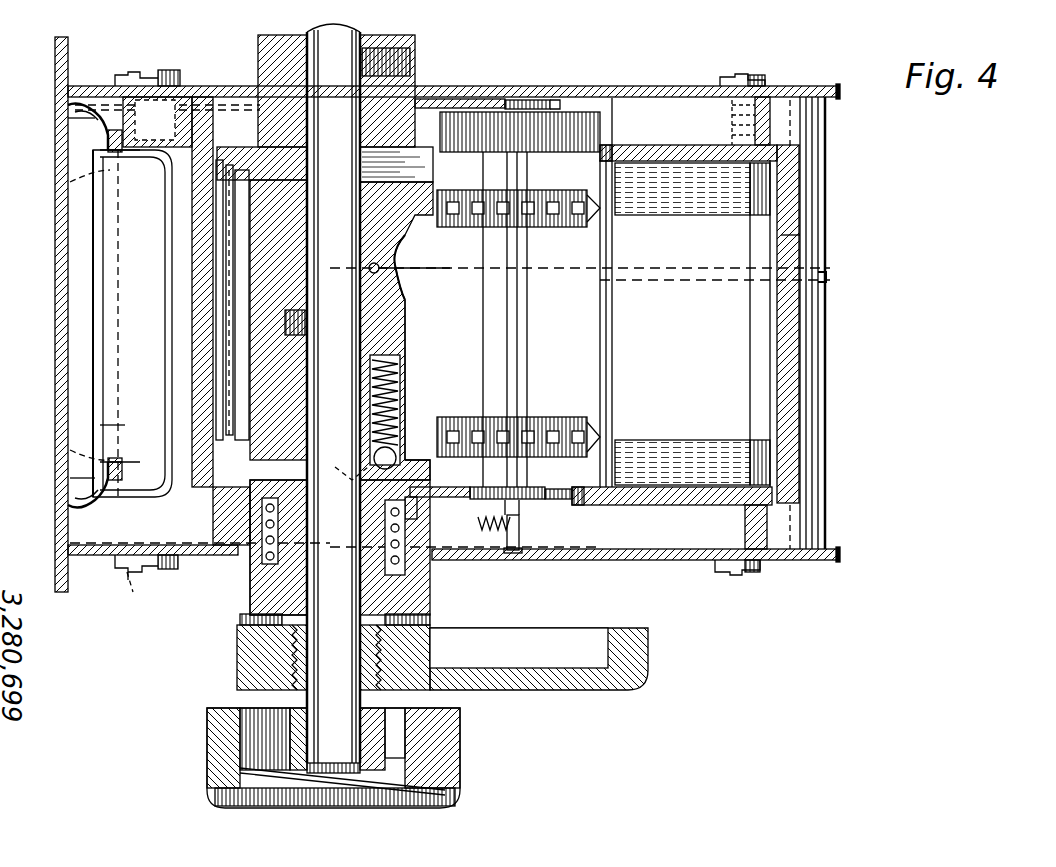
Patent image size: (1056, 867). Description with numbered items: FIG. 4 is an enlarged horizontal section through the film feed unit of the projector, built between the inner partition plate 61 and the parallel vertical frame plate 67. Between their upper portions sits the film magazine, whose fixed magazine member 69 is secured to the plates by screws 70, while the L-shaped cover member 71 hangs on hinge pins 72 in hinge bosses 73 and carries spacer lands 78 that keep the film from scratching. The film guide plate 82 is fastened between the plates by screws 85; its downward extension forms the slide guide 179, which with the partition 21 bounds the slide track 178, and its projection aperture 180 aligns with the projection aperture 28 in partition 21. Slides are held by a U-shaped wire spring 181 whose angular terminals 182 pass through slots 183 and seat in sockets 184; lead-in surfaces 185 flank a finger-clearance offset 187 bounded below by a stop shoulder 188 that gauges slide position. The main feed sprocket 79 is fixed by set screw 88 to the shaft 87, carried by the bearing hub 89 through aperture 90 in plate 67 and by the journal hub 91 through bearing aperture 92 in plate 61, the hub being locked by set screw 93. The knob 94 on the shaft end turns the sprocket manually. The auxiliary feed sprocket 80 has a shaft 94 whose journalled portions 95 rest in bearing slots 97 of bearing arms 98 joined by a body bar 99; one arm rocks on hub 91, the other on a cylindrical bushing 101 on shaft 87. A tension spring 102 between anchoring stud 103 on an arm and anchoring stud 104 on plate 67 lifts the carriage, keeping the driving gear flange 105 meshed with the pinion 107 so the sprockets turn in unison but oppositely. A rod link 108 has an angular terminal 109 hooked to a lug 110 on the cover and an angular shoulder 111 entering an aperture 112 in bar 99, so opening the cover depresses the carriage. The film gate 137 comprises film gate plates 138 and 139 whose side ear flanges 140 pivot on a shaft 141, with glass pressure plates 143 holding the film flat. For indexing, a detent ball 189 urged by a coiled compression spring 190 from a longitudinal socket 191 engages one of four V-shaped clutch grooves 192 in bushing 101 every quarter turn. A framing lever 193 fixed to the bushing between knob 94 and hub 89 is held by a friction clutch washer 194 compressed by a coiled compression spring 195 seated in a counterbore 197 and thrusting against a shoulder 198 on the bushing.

The partition 21 is at (70, 47).
The projection aperture 28 is at (70, 478).
The partition plate 61 is at (605, 86).
The frame plate 67 is at (680, 560).
The fixed magazine member 69 is at (688, 496).
The screws 70 is at (735, 75).
The cover member 71 is at (825, 345).
The hinge pins 72 is at (812, 122).
The hinge bosses 73 is at (825, 142).
The spacer lands 78 is at (695, 205).
The main feed sprocket 79 is at (407, 332).
The auxiliary feed sprocket 80 is at (550, 417).
The film guide plate 82 is at (200, 97).
The screws 85 is at (170, 70).
The shaft 87 is at (390, 332).
The set screw 88 is at (305, 325).
The bearing hub 89 is at (432, 612).
The aperture 90 is at (430, 590).
The journal hub 91 is at (258, 60).
The bearing aperture 92 is at (408, 97).
The set screw 93 is at (415, 52).
The knob 94 is at (527, 352).
The journalled portions 95 is at (522, 100).
The bearing slots 97 is at (548, 100).
The bearing arms 98 is at (472, 100).
The body bar 99 is at (402, 298).
The bushing 101 is at (417, 506).
The tension spring 102 is at (521, 520).
The anchoring stud 103 is at (495, 532).
The anchoring stud 104 is at (522, 548).
The driving gear flange 105 is at (433, 160).
The pinion 107 is at (600, 132).
The rod link 108 is at (556, 270).
The angular terminal 109 is at (802, 236).
The lug 110 is at (826, 277).
The angular shoulder 111 is at (382, 269).
The aperture 112 is at (380, 265).
The plate 137 is at (216, 300).
The film gate plate 138 is at (226, 355).
The film gate plate 139 is at (240, 380).
The side ear flanges 140 is at (112, 86).
The shaft 141 is at (124, 574).
The glass pressure plates 143 is at (240, 404).
The slide track 178 is at (68, 118).
The slide guide 179 is at (100, 425).
The projection aperture 180 is at (70, 182).
The wire spring 181 is at (95, 288).
The angular terminal 182 is at (90, 148).
The slot 183 is at (125, 160).
The socket 184 is at (129, 575).
The lead-in surfaces 185 is at (100, 158).
The finger-clearance offset 187 is at (172, 270).
The stop shoulder 188 is at (120, 238).
The detent ball 189 is at (393, 452).
The compression spring 190 is at (401, 400).
The socket 191 is at (402, 380).
The clutch grooves 192 is at (352, 470).
The framing lever 193 is at (595, 692).
The friction clutch washer 194 is at (240, 620).
The compression spring 195 is at (262, 590).
The counterbore 197 is at (262, 560).
The shoulder 198 is at (412, 462).